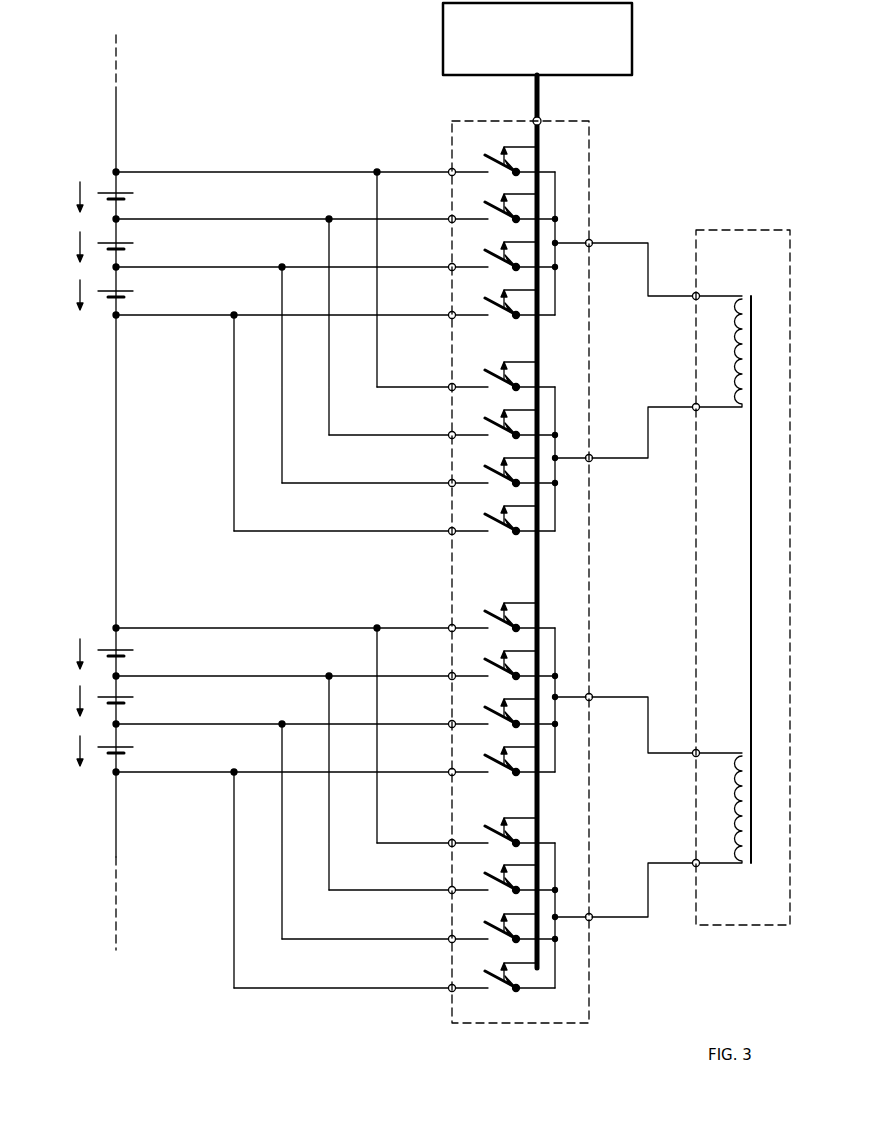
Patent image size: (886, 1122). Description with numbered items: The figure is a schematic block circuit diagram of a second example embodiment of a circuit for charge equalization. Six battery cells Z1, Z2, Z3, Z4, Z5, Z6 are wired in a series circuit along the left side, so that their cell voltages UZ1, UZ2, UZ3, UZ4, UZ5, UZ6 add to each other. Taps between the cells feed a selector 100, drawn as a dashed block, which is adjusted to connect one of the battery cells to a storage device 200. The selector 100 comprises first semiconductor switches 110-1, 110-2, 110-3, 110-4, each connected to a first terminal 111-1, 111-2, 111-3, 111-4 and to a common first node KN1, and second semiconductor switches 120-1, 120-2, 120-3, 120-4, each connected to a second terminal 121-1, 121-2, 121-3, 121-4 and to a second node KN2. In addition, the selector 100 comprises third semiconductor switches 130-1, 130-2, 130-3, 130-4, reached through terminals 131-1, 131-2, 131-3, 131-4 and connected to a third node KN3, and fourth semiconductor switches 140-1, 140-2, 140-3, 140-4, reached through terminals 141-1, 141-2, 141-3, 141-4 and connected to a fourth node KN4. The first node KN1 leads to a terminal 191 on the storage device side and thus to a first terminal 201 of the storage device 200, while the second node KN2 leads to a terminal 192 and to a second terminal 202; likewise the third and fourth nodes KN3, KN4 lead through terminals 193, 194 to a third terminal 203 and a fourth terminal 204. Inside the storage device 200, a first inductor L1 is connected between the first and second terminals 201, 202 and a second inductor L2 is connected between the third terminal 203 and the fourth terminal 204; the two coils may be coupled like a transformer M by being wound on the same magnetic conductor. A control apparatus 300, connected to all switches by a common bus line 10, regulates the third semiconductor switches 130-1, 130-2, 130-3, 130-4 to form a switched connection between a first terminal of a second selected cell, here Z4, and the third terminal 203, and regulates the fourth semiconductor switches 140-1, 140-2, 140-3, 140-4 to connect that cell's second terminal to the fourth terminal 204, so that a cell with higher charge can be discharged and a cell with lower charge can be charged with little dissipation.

The control apparatus 300 is at (562, 50).
The common bus line 10 is at (530, 103).
The selector 100 is at (594, 995).
The storage device 200 is at (737, 229).
The first semiconductor switch 110-1 is at (510, 178).
The first semiconductor switch 110-2 is at (510, 225).
The first semiconductor switch 110-3 is at (510, 273).
The first semiconductor switch 110-4 is at (510, 321).
The first terminal 111-1 is at (449, 169).
The first terminal 111-2 is at (449, 216).
The first terminal 111-3 is at (449, 264).
The first terminal 111-4 is at (449, 312).
The second semiconductor switch 120-1 is at (510, 393).
The second semiconductor switch 120-2 is at (510, 441).
The second semiconductor switch 120-3 is at (510, 489).
The second semiconductor switch 120-4 is at (510, 537).
The second terminal 121-1 is at (449, 384).
The second terminal 121-2 is at (449, 432).
The second terminal 121-3 is at (449, 480).
The second terminal 121-4 is at (449, 528).
The third semiconductor switch 130-1 is at (510, 634).
The third semiconductor switch 130-2 is at (510, 682).
The third semiconductor switch 130-3 is at (510, 730).
The third semiconductor switch 130-4 is at (510, 778).
The terminal 131-1 is at (449, 625).
The terminal 131-2 is at (449, 673).
The terminal 131-3 is at (449, 721).
The terminal 131-4 is at (449, 769).
The fourth semiconductor switch 140-1 is at (510, 849).
The fourth semiconductor switch 140-2 is at (510, 896).
The fourth semiconductor switch 140-3 is at (510, 945).
The fourth semiconductor switch 140-4 is at (510, 994).
The terminal 141-1 is at (449, 840).
The terminal 141-2 is at (449, 887).
The terminal 141-3 is at (449, 936).
The terminal 141-4 is at (449, 985).
The first node KN1 is at (561, 242).
The second node KN2 is at (562, 462).
The third node KN3 is at (562, 696).
The fourth node KN4 is at (563, 921).
The terminal 191 is at (591, 248).
The terminal 192 is at (591, 455).
The terminal 193 is at (592, 702).
The terminal 194 is at (592, 913).
The first terminal 201 is at (690, 300).
The second terminal 202 is at (690, 404).
The third terminal 203 is at (691, 757).
The fourth terminal 204 is at (690, 858).
The first inductor L1 is at (722, 364).
The second inductor L2 is at (722, 821).
The transformer-like coupling M is at (747, 586).
The battery cell Z1 is at (128, 203).
The battery cell Z2 is at (128, 253).
The battery cell Z3 is at (128, 301).
The battery cell Z4 is at (128, 660).
The battery cell Z5 is at (128, 707).
The battery cell Z6 is at (128, 757).
The cell voltage UZ1 is at (59, 197).
The cell voltage UZ2 is at (59, 247).
The cell voltage UZ3 is at (59, 295).
The cell voltage UZ4 is at (59, 654).
The cell voltage UZ5 is at (59, 701).
The cell voltage UZ6 is at (59, 751).